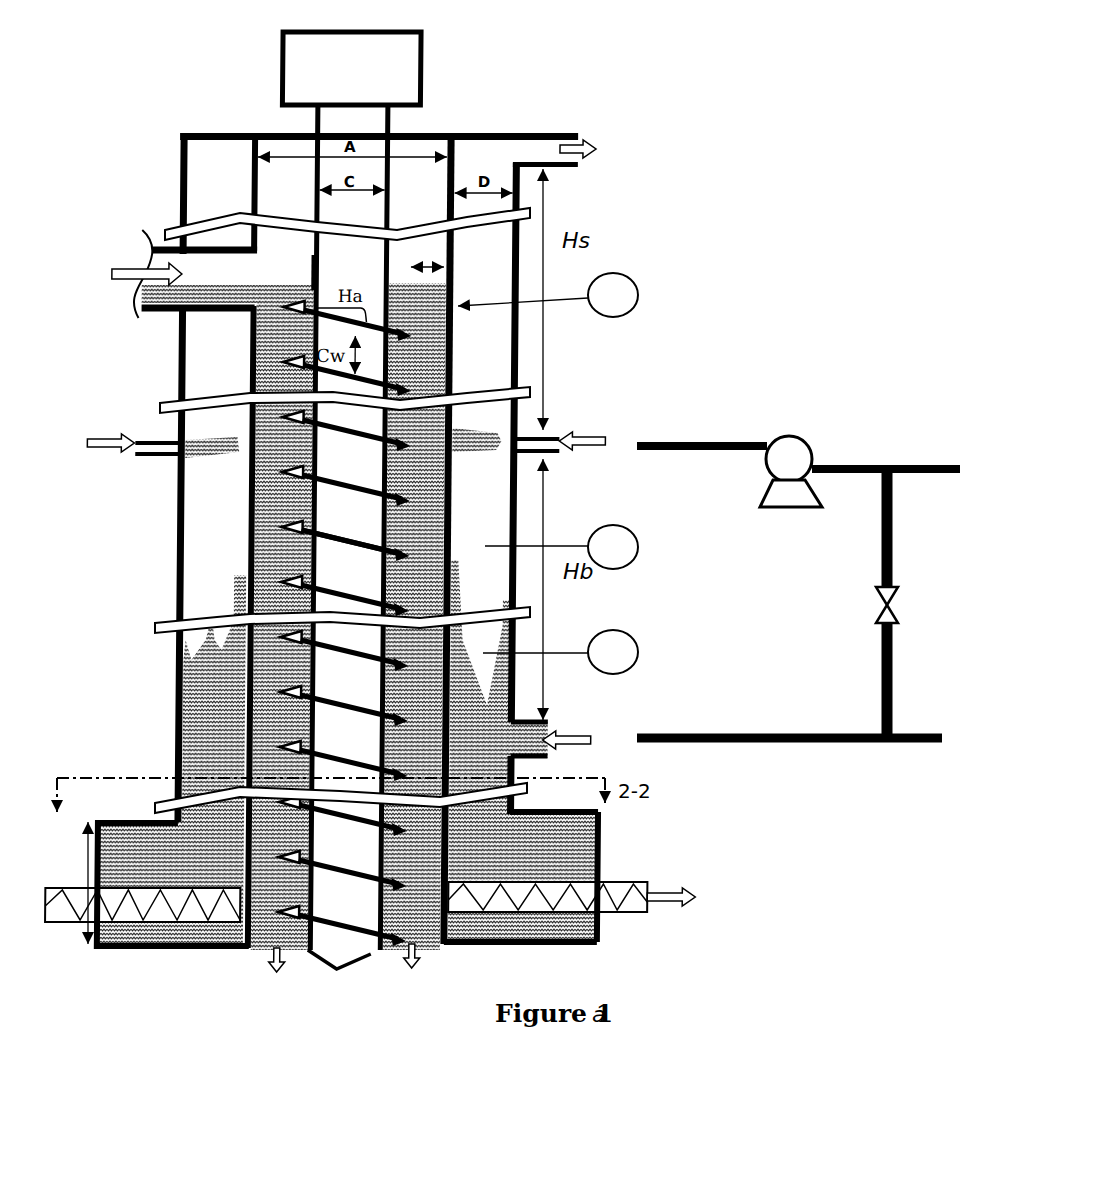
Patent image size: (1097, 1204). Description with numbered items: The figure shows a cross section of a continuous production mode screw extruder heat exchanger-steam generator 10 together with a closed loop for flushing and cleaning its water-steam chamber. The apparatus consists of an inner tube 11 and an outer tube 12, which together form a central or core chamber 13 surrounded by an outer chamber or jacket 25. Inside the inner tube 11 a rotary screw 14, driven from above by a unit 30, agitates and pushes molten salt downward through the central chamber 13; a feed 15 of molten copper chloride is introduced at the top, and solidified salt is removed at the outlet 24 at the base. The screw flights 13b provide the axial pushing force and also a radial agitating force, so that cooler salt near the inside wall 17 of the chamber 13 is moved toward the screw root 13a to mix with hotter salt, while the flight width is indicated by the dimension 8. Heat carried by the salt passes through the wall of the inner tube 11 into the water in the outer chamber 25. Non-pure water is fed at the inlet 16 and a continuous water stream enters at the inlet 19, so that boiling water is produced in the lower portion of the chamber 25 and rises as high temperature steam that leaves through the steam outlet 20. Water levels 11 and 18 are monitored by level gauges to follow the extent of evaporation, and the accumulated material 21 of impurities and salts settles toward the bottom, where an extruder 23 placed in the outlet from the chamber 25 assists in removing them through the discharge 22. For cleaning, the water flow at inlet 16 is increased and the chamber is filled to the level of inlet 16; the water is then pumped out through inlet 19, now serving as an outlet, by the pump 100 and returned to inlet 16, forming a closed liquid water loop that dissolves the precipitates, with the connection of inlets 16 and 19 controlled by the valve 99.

The flight width dimension 8 is at (416, 264).
The screw extruder-steam generator 10 is at (585, 112).
The inner tube 11 is at (519, 297).
The outer tube 12 is at (519, 352).
The central chamber 13 is at (290, 203).
The screw root 13a is at (314, 266).
The screw flights 13b is at (378, 554).
The rotary screw 14 is at (390, 120).
The molten salt feed 15 is at (128, 312).
The water inlet 16 is at (346, 450).
The inside wall 17 is at (456, 373).
The lower liquid level 18 is at (458, 526).
The water stream inlet 19 is at (586, 742).
The steam outlet 20 is at (598, 149).
The processed material 21 is at (268, 710).
The discharge outlet 22 is at (668, 889).
The extruder 23 is at (637, 914).
The solidified salt outlet 24 is at (334, 971).
The outer chamber 25 is at (228, 197).
The drive motor 30 is at (360, 79).
The valve 99 is at (789, 604).
The pump 100 is at (798, 460).